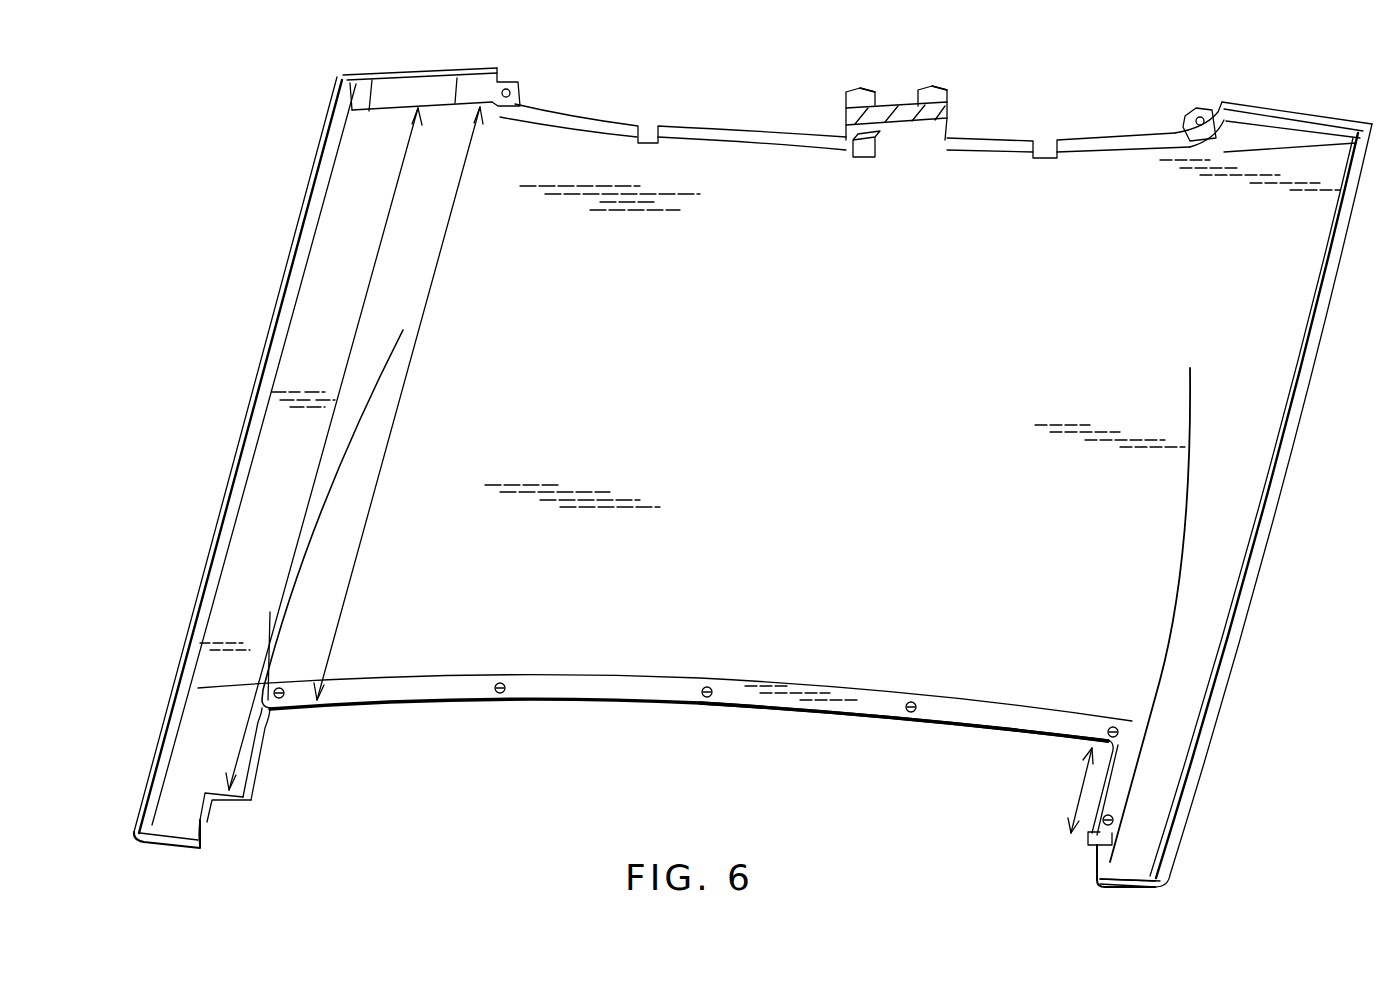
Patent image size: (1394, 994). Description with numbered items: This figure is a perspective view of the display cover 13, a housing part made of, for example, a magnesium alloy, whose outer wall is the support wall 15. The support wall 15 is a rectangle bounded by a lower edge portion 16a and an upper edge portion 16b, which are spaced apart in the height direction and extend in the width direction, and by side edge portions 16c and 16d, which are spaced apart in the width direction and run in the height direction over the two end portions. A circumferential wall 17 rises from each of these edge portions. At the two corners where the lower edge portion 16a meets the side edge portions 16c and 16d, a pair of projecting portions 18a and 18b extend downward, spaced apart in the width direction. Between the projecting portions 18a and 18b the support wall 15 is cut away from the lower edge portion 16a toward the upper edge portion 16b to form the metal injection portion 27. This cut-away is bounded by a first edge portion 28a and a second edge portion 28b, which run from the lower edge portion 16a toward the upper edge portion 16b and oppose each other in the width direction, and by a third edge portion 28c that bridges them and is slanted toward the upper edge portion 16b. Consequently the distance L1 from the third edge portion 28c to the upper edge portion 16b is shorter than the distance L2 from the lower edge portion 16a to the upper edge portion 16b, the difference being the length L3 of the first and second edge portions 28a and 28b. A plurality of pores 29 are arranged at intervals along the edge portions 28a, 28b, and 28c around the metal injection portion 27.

The display cover 13 is at (1295, 435).
The support wall 15 is at (748, 165).
The lower edge portion 16a is at (225, 803).
The upper edge portion 16b is at (460, 85).
The side edge portion 16c is at (300, 312).
The side edge portion 16d is at (1302, 322).
The circumferential wall 17 is at (333, 128).
The projecting portion 18a is at (170, 822).
The projecting portion 18b is at (1148, 872).
The metal injection portion 27 is at (650, 698).
The first edge portion 28a is at (262, 748).
The second edge portion 28b is at (1103, 772).
The third edge portion 28c is at (846, 716).
The pores 29 is at (281, 686).
The distance L1 is at (400, 404).
The distance L2 is at (381, 248).
The length L3 is at (1067, 790).